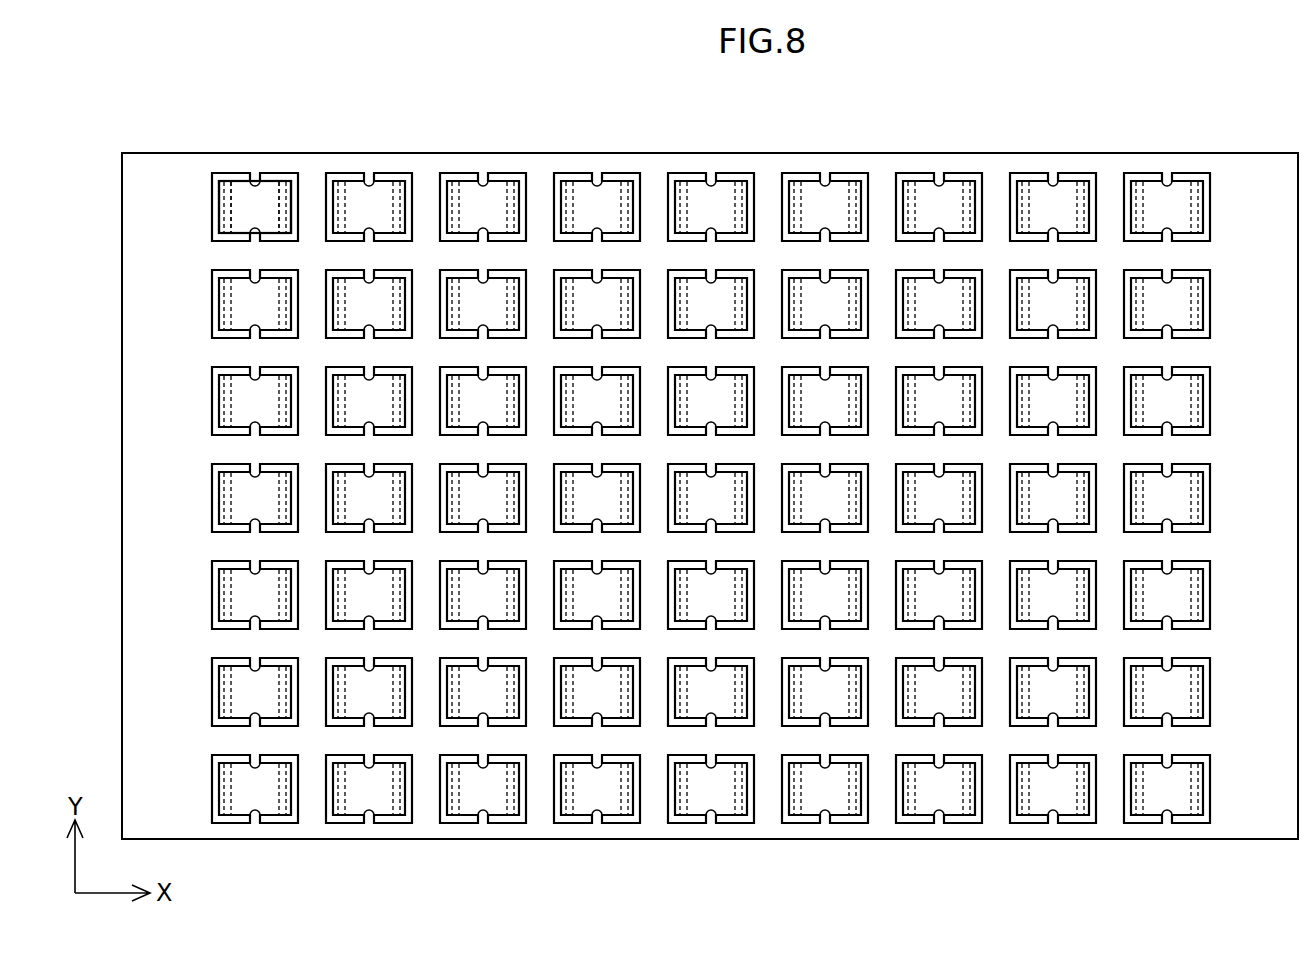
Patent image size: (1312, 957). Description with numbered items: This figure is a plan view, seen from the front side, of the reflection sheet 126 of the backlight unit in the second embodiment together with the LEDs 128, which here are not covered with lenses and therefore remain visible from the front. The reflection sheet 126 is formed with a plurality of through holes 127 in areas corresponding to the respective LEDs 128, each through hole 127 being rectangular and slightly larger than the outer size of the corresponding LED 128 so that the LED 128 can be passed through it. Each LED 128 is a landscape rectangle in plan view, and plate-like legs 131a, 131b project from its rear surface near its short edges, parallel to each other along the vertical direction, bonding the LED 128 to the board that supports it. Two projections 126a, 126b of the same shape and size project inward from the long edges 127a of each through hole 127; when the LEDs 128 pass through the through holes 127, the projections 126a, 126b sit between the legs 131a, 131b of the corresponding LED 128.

The reflection sheet 126 is at (1237, 177).
The projection 126a is at (252, 192).
The projection 126b is at (257, 228).
The through hole 127 is at (230, 180).
The long edge 127a is at (225, 235).
The LED 128 is at (255, 208).
The leg 131a is at (211, 200).
The leg 131b is at (298, 215).